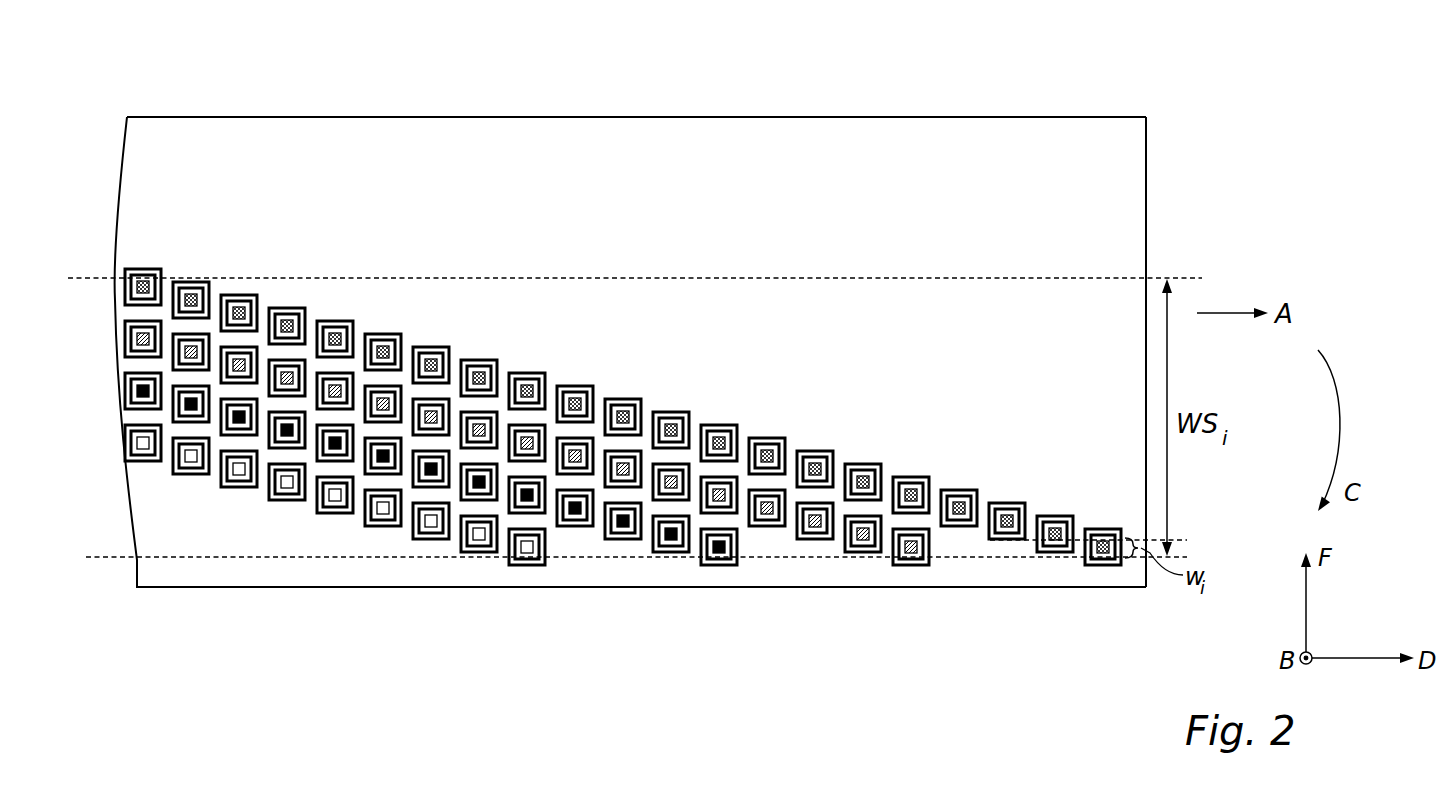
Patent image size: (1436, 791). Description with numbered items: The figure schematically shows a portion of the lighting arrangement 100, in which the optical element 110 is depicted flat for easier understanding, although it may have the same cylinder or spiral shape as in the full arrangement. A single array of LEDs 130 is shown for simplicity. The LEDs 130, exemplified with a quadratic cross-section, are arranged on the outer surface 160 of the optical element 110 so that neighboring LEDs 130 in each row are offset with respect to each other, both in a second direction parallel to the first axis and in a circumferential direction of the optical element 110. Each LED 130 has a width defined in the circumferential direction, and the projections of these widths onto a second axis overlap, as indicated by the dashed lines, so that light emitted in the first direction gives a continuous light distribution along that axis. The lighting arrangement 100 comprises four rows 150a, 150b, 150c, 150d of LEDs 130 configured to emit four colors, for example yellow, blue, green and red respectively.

The lighting arrangement 100 is at (685, 345).
The optical element 110 is at (1150, 250).
The LEDs 130 is at (814, 448).
The row of LEDs (yellow) 150a is at (565, 568).
The row of LEDs (blue) 150b is at (755, 566).
The row of LEDs (green) 150c is at (948, 567).
The row of LEDs (red) 150d is at (1135, 576).
The outer surface 160 is at (903, 213).